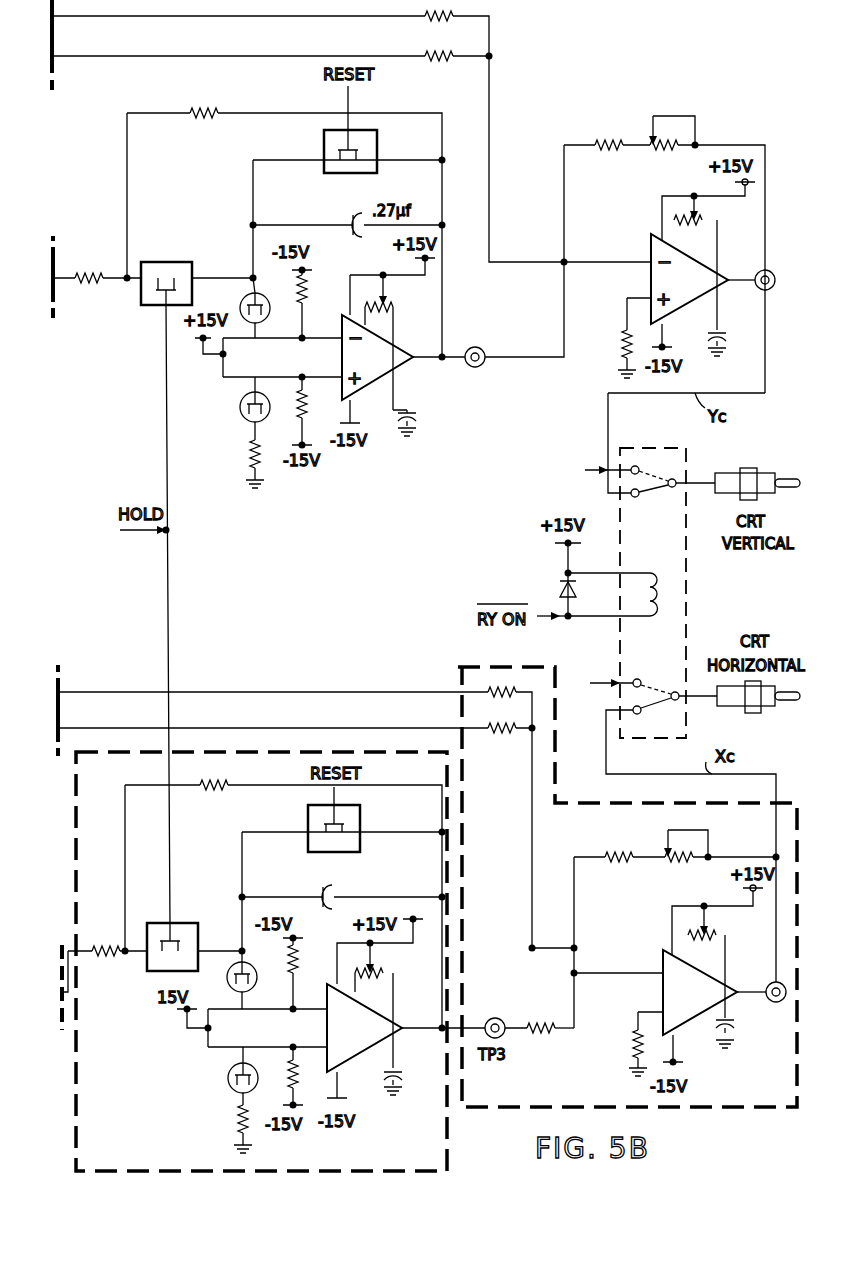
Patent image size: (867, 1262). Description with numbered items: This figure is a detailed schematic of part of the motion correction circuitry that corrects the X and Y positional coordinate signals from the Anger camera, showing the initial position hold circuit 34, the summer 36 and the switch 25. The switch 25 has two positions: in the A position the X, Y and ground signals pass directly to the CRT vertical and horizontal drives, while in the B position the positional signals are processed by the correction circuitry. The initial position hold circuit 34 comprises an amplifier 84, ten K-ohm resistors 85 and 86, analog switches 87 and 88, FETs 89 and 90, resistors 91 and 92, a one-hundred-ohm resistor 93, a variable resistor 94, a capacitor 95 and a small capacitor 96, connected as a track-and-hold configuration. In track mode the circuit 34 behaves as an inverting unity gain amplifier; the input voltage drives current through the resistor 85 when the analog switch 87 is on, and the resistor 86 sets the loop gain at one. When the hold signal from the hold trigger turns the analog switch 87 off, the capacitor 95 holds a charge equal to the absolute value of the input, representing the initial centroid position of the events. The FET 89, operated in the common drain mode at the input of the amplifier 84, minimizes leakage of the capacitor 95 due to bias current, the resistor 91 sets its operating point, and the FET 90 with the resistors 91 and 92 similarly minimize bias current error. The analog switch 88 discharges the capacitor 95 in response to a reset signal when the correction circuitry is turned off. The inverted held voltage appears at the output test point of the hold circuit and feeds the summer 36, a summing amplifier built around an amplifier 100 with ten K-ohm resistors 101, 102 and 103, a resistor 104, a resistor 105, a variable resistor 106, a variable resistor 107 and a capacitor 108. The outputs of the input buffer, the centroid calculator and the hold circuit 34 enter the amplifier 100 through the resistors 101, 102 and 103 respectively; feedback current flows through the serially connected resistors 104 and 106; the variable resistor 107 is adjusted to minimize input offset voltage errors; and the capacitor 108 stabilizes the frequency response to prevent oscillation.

The switch 25 is at (680, 572).
The initial position hold circuit 34 is at (134, 1085).
The summer 36 is at (593, 1105).
The amplifier 84 is at (346, 1062).
The 10 K-ohm resistor 85 is at (106, 948).
The 10 K-ohm resistor 86 is at (212, 781).
The CD4016 analog switch 87 is at (192, 930).
The CD4016 analog switch 88 is at (310, 818).
The FET 89 is at (228, 979).
The FET 90 is at (229, 1078).
The 60.4 K-ohm resistor 91 is at (298, 968).
The 60.4 K-ohm resistor 92 is at (289, 1079).
The 100-ohm resistor 93 is at (233, 1122).
The 20 K-ohm variable resistor 94 is at (385, 976).
The 0.27 μf capacitor 95 is at (323, 894).
The 10 pf capacitor 96 is at (400, 1075).
The HA2525 amplifier 100 is at (663, 992).
The 10 K-ohm resistor 101 is at (492, 690).
The 10 K-ohm resistor 102 is at (509, 733).
The 10 K-ohm resistor 103 is at (540, 1038).
The 8.25 K-ohm resistor 104 is at (612, 852).
The 2.5 K-ohm resistor 105 is at (634, 1040).
The 5 K-ohm variable resistor 106 is at (680, 862).
The 20 K-ohm variable resistor 107 is at (695, 940).
The 20 pf capacitor 108 is at (738, 1030).